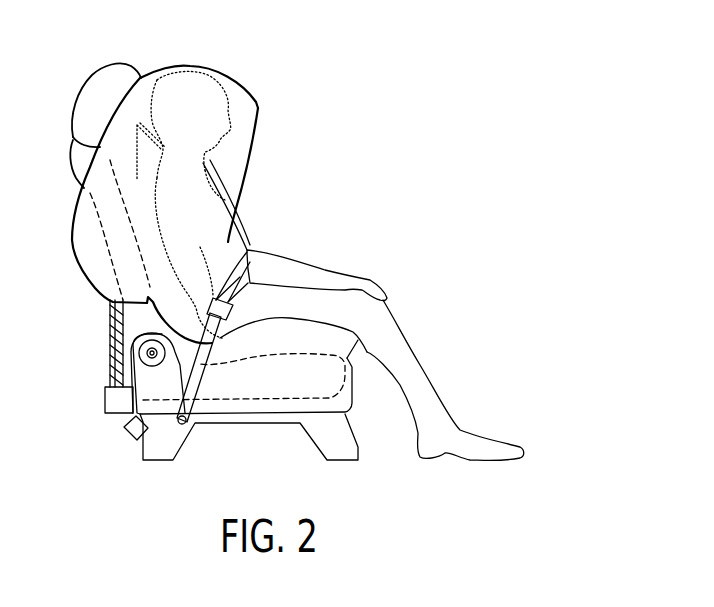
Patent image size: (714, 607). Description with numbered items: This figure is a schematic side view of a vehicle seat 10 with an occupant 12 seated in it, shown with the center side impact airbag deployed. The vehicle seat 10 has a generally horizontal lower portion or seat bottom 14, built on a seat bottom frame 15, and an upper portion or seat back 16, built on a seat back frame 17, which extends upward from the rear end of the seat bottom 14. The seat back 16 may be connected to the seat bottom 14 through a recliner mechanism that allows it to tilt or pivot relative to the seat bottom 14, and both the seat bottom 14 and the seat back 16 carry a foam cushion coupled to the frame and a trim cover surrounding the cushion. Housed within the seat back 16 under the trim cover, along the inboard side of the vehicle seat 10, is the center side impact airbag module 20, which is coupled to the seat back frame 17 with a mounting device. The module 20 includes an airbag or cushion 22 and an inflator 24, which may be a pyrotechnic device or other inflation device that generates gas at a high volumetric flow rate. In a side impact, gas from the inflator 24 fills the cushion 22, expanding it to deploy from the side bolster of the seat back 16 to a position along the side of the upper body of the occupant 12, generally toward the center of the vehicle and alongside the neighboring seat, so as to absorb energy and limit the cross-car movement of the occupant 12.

The vehicle seat 10 is at (88, 390).
The occupant 12 is at (345, 278).
The seat bottom 14 is at (347, 338).
The seat bottom frame 15 is at (250, 383).
The seat back 16 is at (128, 337).
The seat back frame 17 is at (96, 161).
The center side impact airbag module 20 is at (262, 80).
The airbag cushion 22 is at (243, 127).
The inflator 24 is at (128, 325).